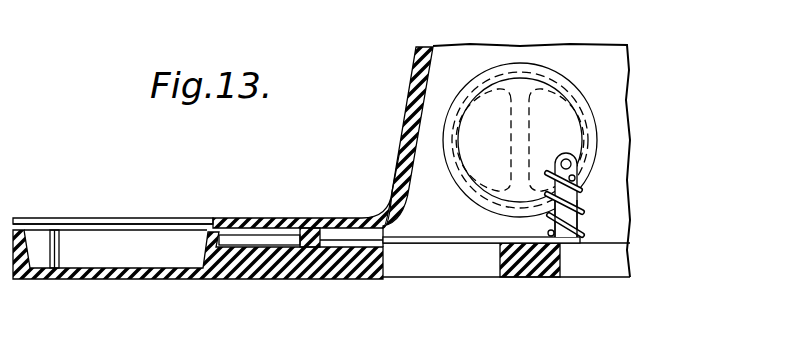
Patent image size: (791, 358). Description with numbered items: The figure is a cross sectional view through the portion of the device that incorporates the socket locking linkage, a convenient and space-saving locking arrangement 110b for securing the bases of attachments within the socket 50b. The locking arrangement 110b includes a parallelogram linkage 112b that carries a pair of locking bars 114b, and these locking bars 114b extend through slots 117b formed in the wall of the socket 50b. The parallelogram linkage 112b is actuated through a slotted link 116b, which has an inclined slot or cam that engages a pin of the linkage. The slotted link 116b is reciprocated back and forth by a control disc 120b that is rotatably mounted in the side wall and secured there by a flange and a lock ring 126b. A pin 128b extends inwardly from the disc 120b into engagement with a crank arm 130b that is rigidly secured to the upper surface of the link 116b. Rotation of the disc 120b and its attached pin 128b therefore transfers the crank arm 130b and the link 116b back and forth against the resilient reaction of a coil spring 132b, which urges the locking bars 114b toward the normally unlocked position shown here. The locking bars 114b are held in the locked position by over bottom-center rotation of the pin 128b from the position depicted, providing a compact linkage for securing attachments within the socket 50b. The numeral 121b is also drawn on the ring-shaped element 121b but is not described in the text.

The socket 50b is at (153, 243).
The slots 117b is at (108, 232).
The locking bars 114b is at (65, 232).
The parallelogram linkage 112b is at (300, 228).
The control disc 120b is at (317, 232).
The locking arrangement 110b is at (318, 222).
The lock ring 126b is at (447, 126).
The ring 121b is at (518, 82).
The slotted link 116b is at (565, 243).
The pin 128b is at (572, 163).
The coil spring 132b is at (578, 190).
The crank arm 130b is at (578, 218).